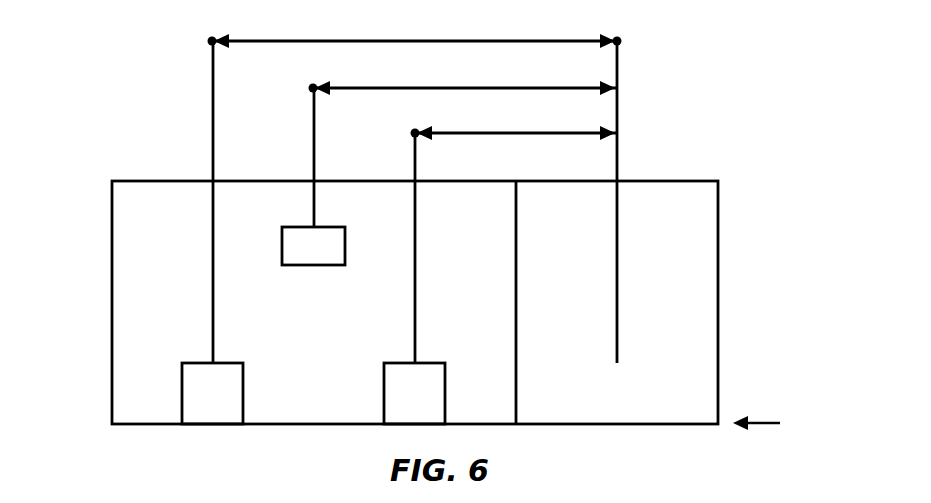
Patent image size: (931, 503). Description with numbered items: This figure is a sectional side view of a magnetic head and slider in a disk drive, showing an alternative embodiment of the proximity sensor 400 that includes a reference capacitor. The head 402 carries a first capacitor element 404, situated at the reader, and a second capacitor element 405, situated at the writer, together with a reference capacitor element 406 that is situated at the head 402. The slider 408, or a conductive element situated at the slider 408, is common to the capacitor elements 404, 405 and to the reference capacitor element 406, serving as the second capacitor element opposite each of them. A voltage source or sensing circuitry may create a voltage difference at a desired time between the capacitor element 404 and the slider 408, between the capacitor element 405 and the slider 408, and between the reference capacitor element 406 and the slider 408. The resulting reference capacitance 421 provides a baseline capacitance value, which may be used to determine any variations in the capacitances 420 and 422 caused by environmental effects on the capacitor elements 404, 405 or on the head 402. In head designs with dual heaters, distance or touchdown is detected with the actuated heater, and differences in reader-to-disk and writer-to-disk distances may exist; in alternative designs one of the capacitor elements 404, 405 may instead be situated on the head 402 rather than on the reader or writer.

The proximity sensor 400 is at (133, 82).
The head 402 is at (161, 196).
The capacitor element 404 is at (199, 362).
The capacitor element 405 is at (400, 362).
The reference capacitor element 406 is at (298, 227).
The slider 408 is at (668, 197).
The capacitance 420 is at (518, 133).
The reference capacitance 421 is at (467, 88).
The capacitance 422 is at (414, 41).